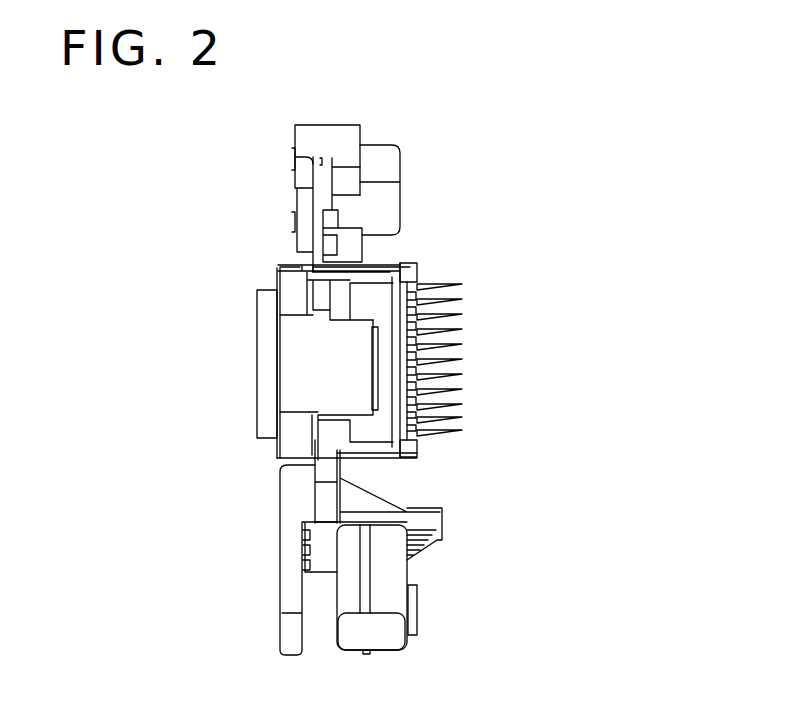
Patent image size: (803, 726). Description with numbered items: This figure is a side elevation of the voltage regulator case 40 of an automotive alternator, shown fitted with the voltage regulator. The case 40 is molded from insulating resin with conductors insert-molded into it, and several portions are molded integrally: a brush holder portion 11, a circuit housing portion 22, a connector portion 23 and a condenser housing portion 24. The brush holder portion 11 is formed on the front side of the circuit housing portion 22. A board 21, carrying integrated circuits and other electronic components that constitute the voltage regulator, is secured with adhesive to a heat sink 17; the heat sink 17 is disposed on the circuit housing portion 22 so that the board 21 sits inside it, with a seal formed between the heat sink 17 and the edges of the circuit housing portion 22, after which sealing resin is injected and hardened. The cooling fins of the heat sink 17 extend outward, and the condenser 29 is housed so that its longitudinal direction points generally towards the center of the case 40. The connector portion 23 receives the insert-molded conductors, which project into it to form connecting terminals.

The brush holder portion 11 is at (277, 402).
The heat sink 17 is at (450, 433).
The board 21 is at (372, 302).
The circuit housing portion 22 is at (386, 277).
The connector portion 23 is at (417, 603).
The condenser housing portion 24 is at (345, 136).
The condenser 29 is at (375, 170).
The voltage regulator case 40 is at (443, 263).